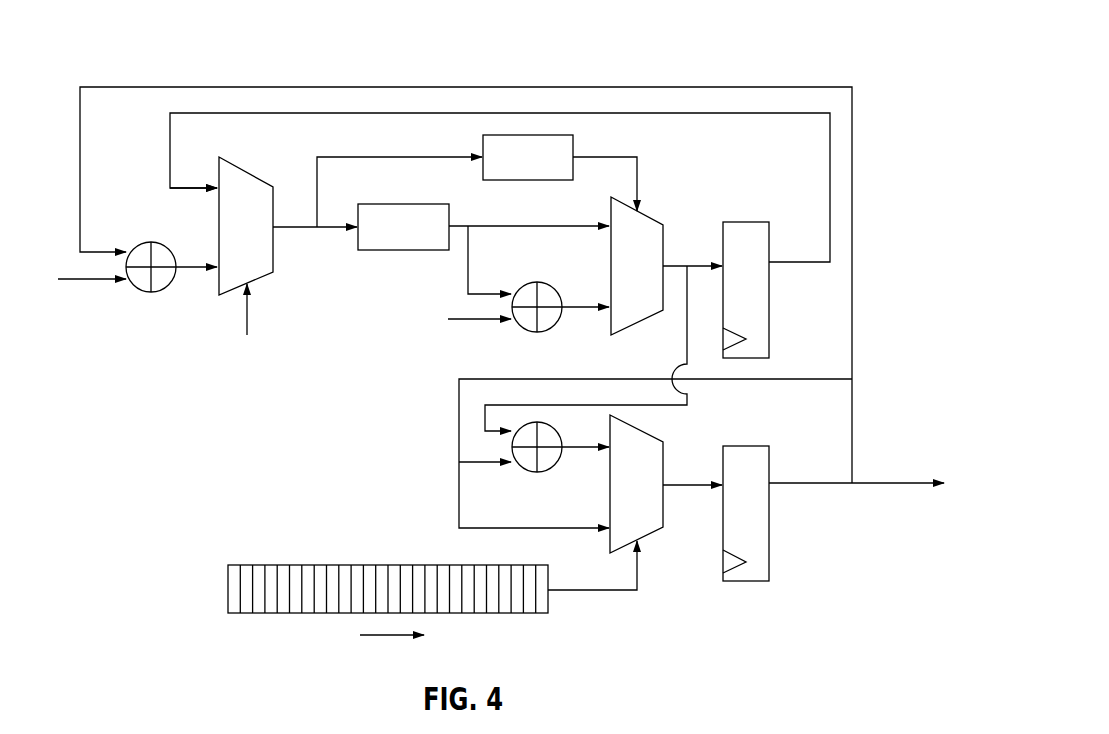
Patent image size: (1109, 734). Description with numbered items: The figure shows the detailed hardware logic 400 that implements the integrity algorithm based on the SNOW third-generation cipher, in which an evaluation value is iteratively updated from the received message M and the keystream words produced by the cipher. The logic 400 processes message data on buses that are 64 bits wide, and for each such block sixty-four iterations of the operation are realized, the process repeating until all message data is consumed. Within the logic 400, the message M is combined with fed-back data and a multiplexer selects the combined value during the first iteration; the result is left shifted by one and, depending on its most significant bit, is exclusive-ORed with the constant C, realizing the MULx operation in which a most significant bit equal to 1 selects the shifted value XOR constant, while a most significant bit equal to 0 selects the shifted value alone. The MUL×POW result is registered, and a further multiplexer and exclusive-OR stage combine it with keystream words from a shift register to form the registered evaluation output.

The hardware logic 400 is at (793, 52).
The 64-bit data bus 64 is at (795, 275).
The multiplexer input 0 is at (205, 189).
The multiplexer input 1 is at (208, 269).